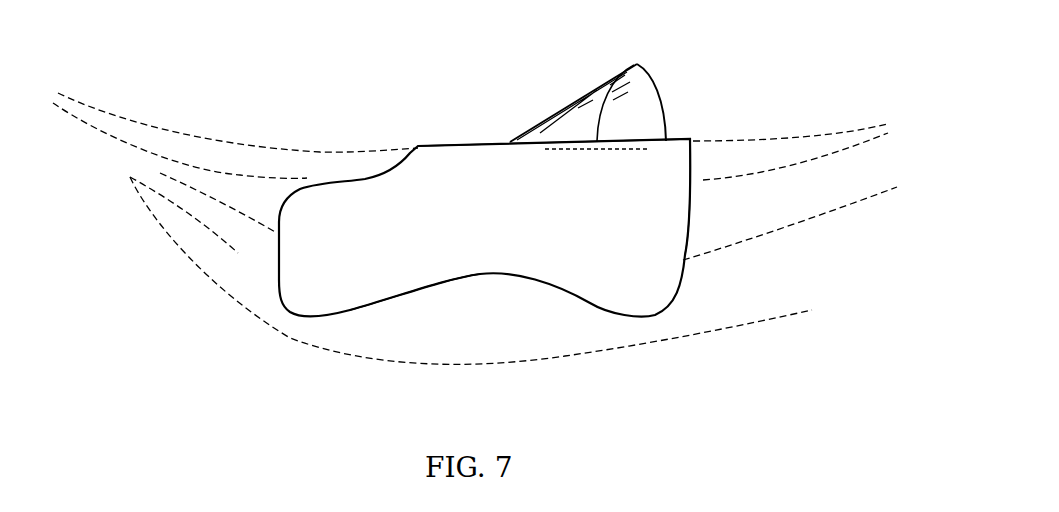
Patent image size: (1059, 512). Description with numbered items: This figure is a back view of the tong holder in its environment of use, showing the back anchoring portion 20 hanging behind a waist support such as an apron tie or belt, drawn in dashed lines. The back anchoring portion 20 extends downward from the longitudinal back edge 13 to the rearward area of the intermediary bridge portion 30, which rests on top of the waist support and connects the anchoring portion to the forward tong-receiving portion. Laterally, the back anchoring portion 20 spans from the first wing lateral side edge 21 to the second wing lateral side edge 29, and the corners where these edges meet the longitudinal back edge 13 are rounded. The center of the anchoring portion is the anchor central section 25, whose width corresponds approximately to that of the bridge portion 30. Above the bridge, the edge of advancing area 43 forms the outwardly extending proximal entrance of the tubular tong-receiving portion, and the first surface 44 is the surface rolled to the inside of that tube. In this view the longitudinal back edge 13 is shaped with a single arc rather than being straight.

The longitudinal back edge 13 is at (445, 282).
The back anchoring portion 20 is at (620, 262).
The first wing lateral side edge 21 is at (690, 205).
The anchor central section 25 is at (458, 203).
The second wing lateral side edge 29 is at (277, 259).
The intermediary bridge portion 30 is at (468, 126).
The edge of advancing area 43 is at (638, 62).
The first surface 44 is at (519, 211).